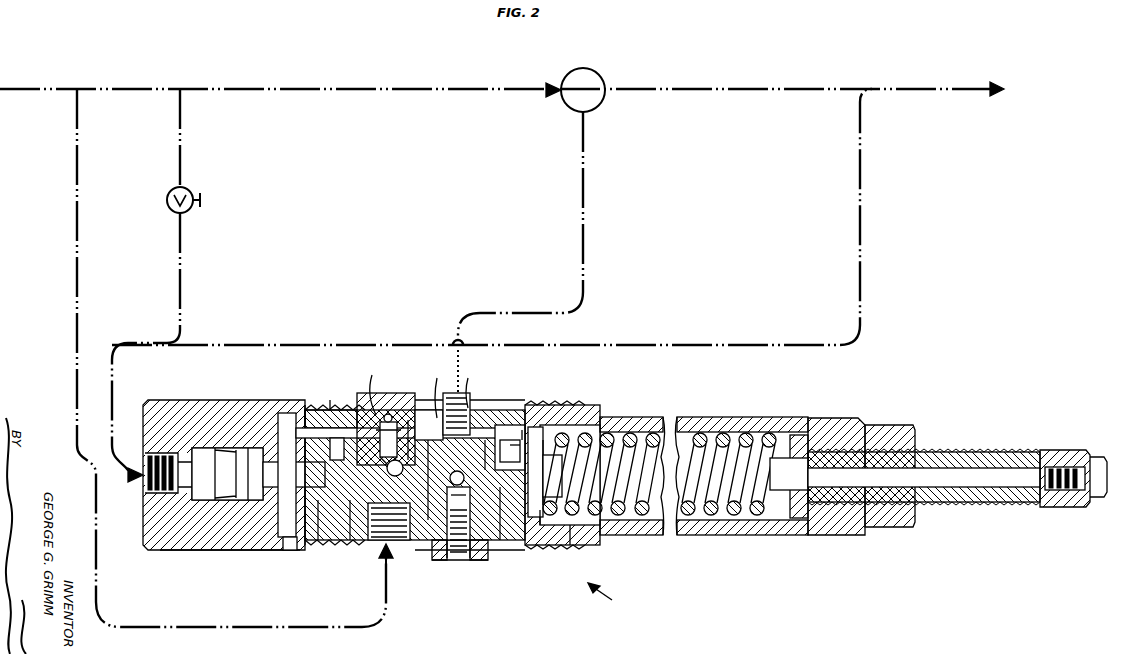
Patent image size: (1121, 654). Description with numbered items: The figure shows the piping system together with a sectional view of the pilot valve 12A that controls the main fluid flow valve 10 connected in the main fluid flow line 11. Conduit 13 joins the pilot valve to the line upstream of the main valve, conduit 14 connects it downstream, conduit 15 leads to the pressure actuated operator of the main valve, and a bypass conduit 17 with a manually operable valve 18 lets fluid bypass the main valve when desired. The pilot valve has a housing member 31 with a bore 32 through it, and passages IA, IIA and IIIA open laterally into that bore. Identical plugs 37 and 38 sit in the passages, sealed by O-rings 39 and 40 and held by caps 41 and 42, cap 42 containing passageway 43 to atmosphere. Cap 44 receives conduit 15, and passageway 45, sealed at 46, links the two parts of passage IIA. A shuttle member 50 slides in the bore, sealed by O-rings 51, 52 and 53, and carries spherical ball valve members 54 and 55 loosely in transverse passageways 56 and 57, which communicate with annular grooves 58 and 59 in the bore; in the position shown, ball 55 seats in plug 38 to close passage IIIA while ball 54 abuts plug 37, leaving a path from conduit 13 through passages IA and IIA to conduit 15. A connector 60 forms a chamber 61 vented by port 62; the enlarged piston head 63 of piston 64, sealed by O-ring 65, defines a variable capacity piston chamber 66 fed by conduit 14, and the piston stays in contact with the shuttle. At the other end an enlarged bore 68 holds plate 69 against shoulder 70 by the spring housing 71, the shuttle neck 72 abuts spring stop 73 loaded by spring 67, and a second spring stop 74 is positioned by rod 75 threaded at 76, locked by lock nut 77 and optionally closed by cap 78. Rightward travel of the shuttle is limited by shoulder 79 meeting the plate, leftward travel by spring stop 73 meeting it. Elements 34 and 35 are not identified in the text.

The main fluid flow valve 10 is at (592, 72).
The main fluid flow line 11 is at (314, 82).
The pilot valve 12A is at (613, 597).
The conduit 13 is at (72, 275).
The conduit 14 is at (862, 320).
The conduit 15 is at (580, 268).
The bypass conduit 17 is at (182, 250).
The manually operable valve 18 is at (186, 188).
The housing member 31 is at (516, 542).
The bore 32 is at (320, 404).
The passage 34 is at (486, 430).
The seal 35 is at (384, 416).
The plug 37 is at (400, 394).
The plug 38 is at (460, 546).
The O-ring 39 is at (409, 420).
The O-ring 40 is at (438, 522).
The cap 41 is at (388, 422).
The cap 42 is at (470, 558).
The passageway 43 is at (454, 540).
The cap 44 is at (470, 402).
The passageway 45 is at (436, 410).
The seal 46 is at (304, 416).
The shuttle member 50 is at (324, 530).
The O-ring 51 is at (348, 530).
The O-ring 52 is at (400, 522).
The O-ring 53 is at (502, 545).
The spherical ball valve member 54 is at (344, 410).
The spherical ball valve member 55 is at (502, 430).
The transverse passageway 56 is at (394, 476).
The transverse passageway 57 is at (497, 426).
The annular groove 58 is at (325, 474).
The annular groove 59 is at (560, 404).
The connector 60 is at (188, 398).
The chamber 61 is at (280, 414).
The port 62 is at (288, 550).
The enlarged piston head 63 is at (216, 500).
The piston 64 is at (266, 492).
The O-ring 65 is at (240, 446).
The variable capacity piston chamber 66 is at (206, 534).
The spring 67 is at (734, 436).
The enlarged bore 68 is at (546, 456).
The plate 69 is at (538, 426).
The shoulder 70 is at (538, 524).
The spring housing 71 is at (644, 418).
The neck 72 is at (572, 540).
The spring stop 73 is at (562, 484).
The second spring stop 74 is at (800, 434).
The rod 75 is at (958, 452).
The threaded engagement 76 is at (844, 530).
The lock nut 77 is at (916, 514).
The cap 78 is at (1100, 506).
The shoulder 79 is at (522, 428).
The passage IA is at (369, 576).
The passage IIA is at (421, 386).
The passage IIIA is at (460, 575).